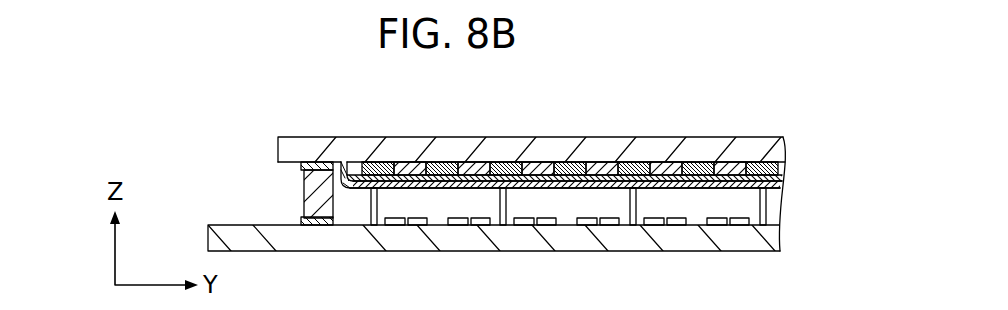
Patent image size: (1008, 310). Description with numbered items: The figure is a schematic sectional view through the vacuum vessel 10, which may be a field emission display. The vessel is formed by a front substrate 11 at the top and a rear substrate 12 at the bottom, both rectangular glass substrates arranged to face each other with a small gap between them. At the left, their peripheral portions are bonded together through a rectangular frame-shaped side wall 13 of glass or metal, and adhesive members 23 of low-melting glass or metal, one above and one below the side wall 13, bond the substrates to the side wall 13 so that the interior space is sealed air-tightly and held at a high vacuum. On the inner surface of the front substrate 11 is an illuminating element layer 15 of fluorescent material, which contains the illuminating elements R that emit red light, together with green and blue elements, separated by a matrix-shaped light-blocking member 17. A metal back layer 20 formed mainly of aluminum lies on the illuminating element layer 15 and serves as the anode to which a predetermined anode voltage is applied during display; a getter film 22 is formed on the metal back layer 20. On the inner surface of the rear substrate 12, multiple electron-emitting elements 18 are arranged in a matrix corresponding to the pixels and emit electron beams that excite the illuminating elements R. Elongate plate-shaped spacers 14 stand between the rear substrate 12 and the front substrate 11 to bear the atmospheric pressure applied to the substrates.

The vacuum vessel 10 is at (320, 129).
The front substrate 11 is at (537, 137).
The rear substrate 12 is at (608, 251).
The side wall 13 is at (310, 192).
The spacer 14 is at (378, 203).
The illuminating element layer 15 is at (474, 163).
The light-blocking member 17 is at (730, 162).
The electron-emitting element 18 is at (416, 225).
The metal back layer 20 is at (410, 162).
The getter film 22 is at (757, 186).
The adhesive member 23 is at (300, 166).
The illuminating element R is at (762, 162).